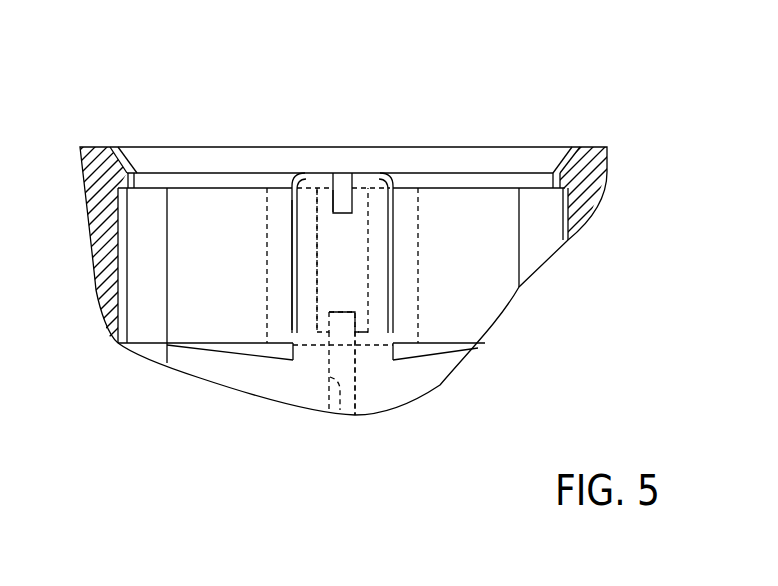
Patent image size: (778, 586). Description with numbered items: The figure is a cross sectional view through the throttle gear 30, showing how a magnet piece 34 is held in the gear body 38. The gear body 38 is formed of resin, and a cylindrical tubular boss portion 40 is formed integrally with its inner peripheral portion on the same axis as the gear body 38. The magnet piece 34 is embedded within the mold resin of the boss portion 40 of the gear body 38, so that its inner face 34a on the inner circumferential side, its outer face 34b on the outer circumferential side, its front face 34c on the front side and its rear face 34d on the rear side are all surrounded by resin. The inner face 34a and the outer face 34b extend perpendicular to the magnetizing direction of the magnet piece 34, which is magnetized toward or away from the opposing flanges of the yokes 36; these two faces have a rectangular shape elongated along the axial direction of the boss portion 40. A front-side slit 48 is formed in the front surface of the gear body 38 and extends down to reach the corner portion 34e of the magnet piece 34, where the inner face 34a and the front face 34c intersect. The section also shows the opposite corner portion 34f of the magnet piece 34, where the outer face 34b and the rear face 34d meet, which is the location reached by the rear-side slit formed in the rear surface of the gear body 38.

The throttle gear 30 is at (573, 98).
The gear body 38 is at (95, 140).
The boss portion 40 is at (363, 182).
The magnet piece 34 is at (372, 223).
The inner face 34a is at (325, 292).
The outer face 34b is at (323, 435).
The front face 34c is at (320, 185).
The rear face 34d is at (355, 333).
The corner portion 34e is at (339, 200).
The corner portion 34f is at (340, 410).
The yoke 36 is at (267, 188).
The front-side slit 48 is at (348, 200).